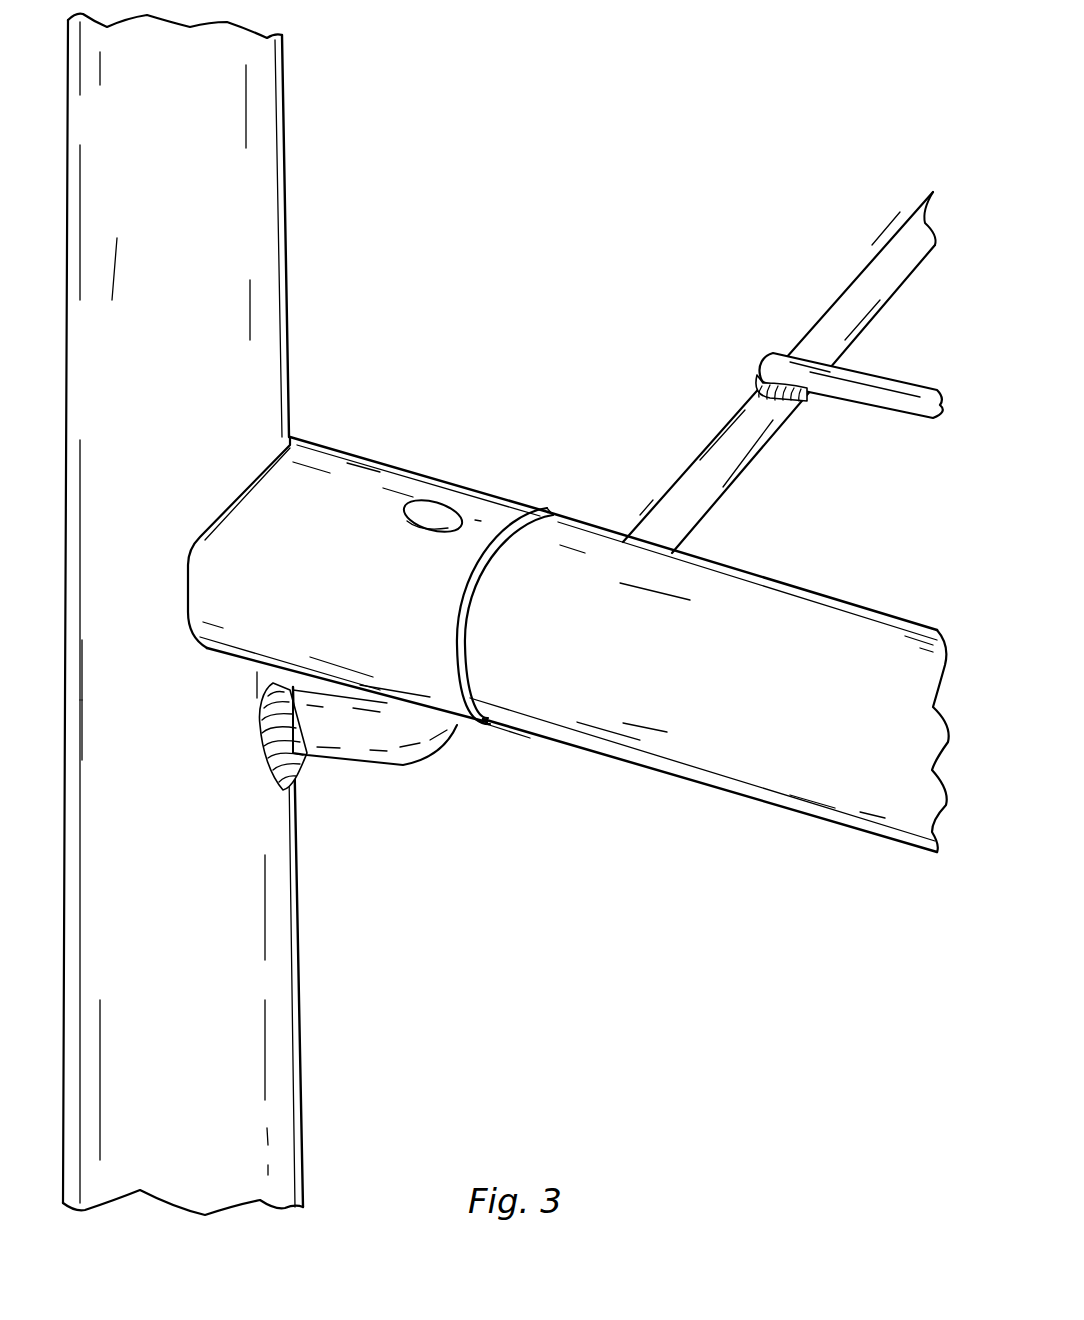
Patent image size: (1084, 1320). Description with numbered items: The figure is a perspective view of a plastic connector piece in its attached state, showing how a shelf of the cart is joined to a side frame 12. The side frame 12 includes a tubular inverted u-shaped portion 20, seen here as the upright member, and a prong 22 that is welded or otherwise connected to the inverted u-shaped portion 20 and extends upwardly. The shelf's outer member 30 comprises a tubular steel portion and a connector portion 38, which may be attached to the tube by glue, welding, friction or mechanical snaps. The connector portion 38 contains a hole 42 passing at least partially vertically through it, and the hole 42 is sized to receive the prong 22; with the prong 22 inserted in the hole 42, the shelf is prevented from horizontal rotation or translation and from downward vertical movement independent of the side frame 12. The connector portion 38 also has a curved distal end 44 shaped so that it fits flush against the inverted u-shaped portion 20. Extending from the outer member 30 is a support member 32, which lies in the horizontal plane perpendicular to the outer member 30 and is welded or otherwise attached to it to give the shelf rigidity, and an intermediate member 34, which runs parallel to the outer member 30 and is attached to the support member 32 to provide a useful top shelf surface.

The side frame 12 is at (300, 97).
The inverted u-shaped portion 20 is at (245, 1075).
The prong 22 is at (420, 772).
The outer member 30 is at (676, 740).
The support member 32 is at (826, 297).
The intermediate member 34 is at (852, 405).
The connector portion 38 is at (355, 530).
The hole 42 is at (438, 500).
The curved distal end 44 is at (234, 500).